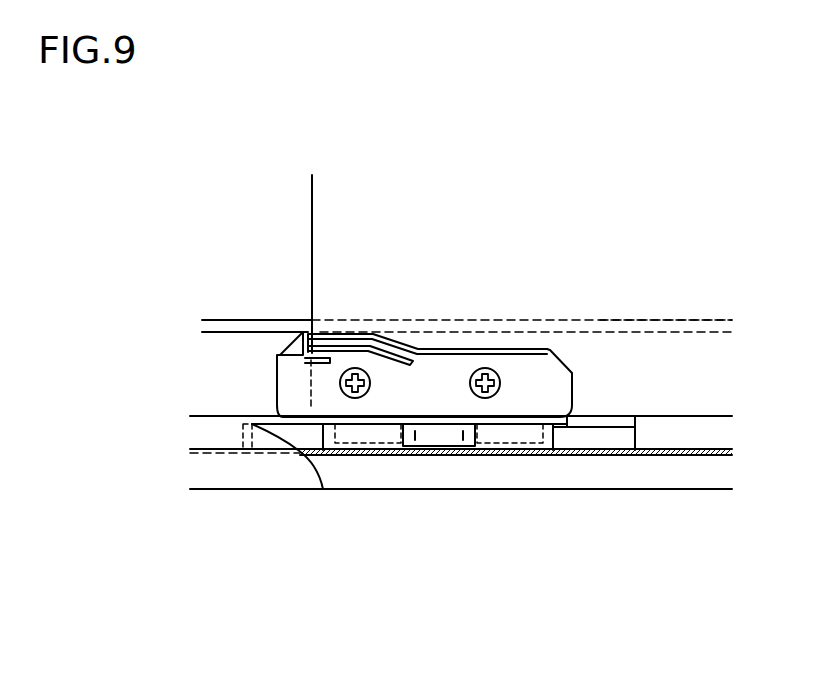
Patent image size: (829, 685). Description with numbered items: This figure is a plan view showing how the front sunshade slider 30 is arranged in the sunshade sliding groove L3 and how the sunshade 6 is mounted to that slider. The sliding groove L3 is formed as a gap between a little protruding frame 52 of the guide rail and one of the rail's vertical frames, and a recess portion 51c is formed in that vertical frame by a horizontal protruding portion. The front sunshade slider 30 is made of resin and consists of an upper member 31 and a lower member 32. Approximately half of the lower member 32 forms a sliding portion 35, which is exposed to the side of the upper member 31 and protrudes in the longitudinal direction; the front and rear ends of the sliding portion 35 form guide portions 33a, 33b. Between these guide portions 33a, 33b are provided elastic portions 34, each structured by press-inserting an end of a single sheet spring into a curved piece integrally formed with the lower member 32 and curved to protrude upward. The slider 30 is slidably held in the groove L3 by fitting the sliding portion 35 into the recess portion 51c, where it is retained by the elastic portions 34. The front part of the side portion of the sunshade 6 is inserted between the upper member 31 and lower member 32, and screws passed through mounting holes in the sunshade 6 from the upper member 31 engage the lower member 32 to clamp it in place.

The sunshade 6 is at (332, 225).
The protruding frame 52 is at (230, 320).
The sliding groove L3 is at (695, 345).
The front sunshade slider 30 is at (543, 360).
The upper member 31 is at (443, 368).
The lower member 32 is at (275, 413).
The guide portion 33a is at (252, 456).
The elastic portion 34 is at (370, 454).
The sliding portion 35 is at (440, 441).
The guide portion 33b is at (618, 445).
The recess portion 51c is at (683, 442).